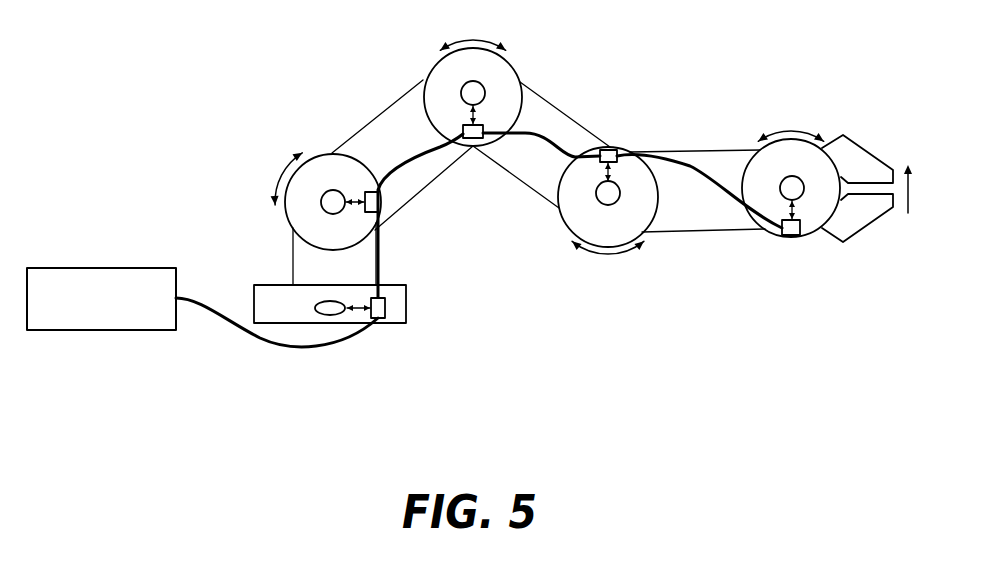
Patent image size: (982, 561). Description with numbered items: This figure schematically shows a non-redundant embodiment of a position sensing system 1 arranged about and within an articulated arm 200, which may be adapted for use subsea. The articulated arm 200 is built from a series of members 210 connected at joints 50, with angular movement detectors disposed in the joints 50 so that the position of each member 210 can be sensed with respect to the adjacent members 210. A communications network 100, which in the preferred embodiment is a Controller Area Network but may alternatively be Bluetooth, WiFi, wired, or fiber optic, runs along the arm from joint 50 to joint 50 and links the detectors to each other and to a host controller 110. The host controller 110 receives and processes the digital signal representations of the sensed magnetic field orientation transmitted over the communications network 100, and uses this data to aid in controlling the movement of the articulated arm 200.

The position sensing system 1 is at (491, 362).
The joint 50 is at (326, 211).
The communications network 100 is at (288, 352).
The host controller 110 is at (103, 330).
The articulated arm 200 is at (580, 298).
The member 210 is at (293, 266).